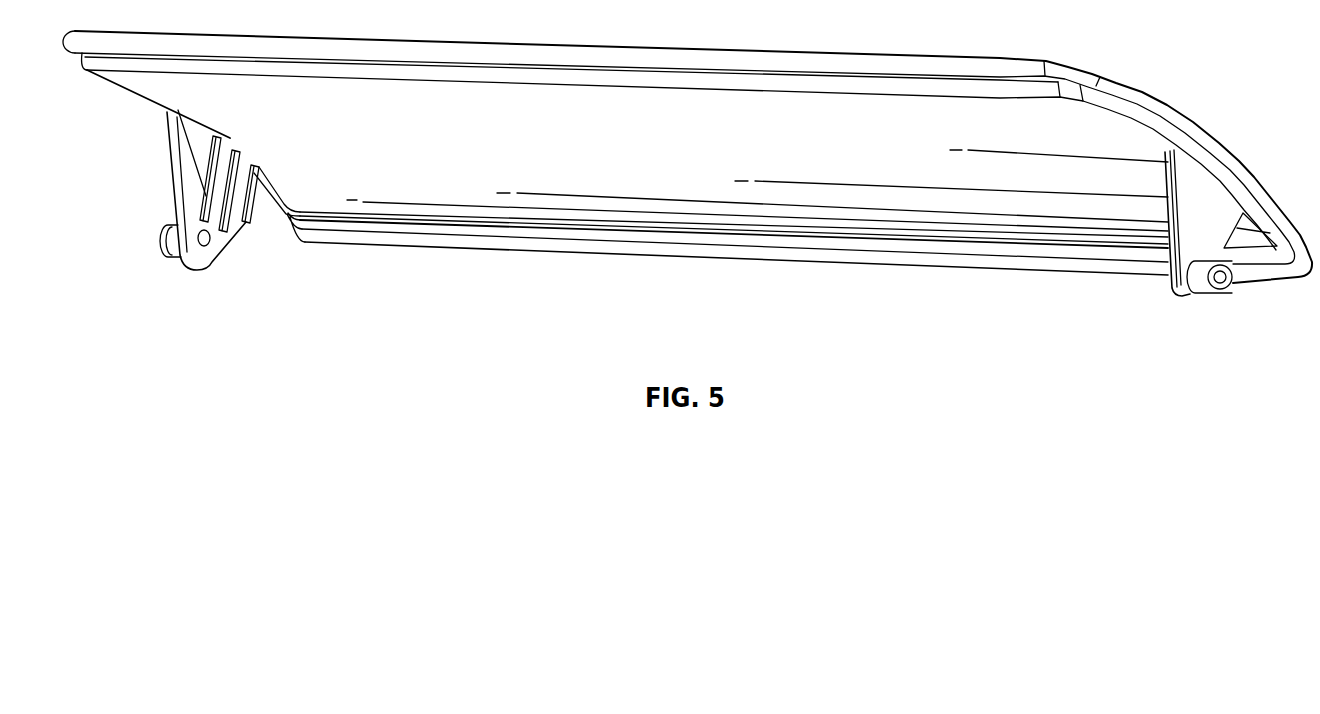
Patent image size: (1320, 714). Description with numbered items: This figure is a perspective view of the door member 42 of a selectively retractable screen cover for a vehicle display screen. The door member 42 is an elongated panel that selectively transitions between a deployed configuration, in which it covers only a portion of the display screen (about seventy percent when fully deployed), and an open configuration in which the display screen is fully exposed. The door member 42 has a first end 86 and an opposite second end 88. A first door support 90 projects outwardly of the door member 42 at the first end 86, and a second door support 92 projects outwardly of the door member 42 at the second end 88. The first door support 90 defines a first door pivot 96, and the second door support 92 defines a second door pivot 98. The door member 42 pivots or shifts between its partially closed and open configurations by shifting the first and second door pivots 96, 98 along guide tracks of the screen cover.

The door member 42 is at (1050, 285).
The first end 86 is at (1161, 103).
The second end 88 is at (103, 79).
The first door support 90 is at (1215, 207).
The second door support 92 is at (184, 196).
The first door pivot 96 is at (1206, 286).
The second door pivot 98 is at (170, 254).